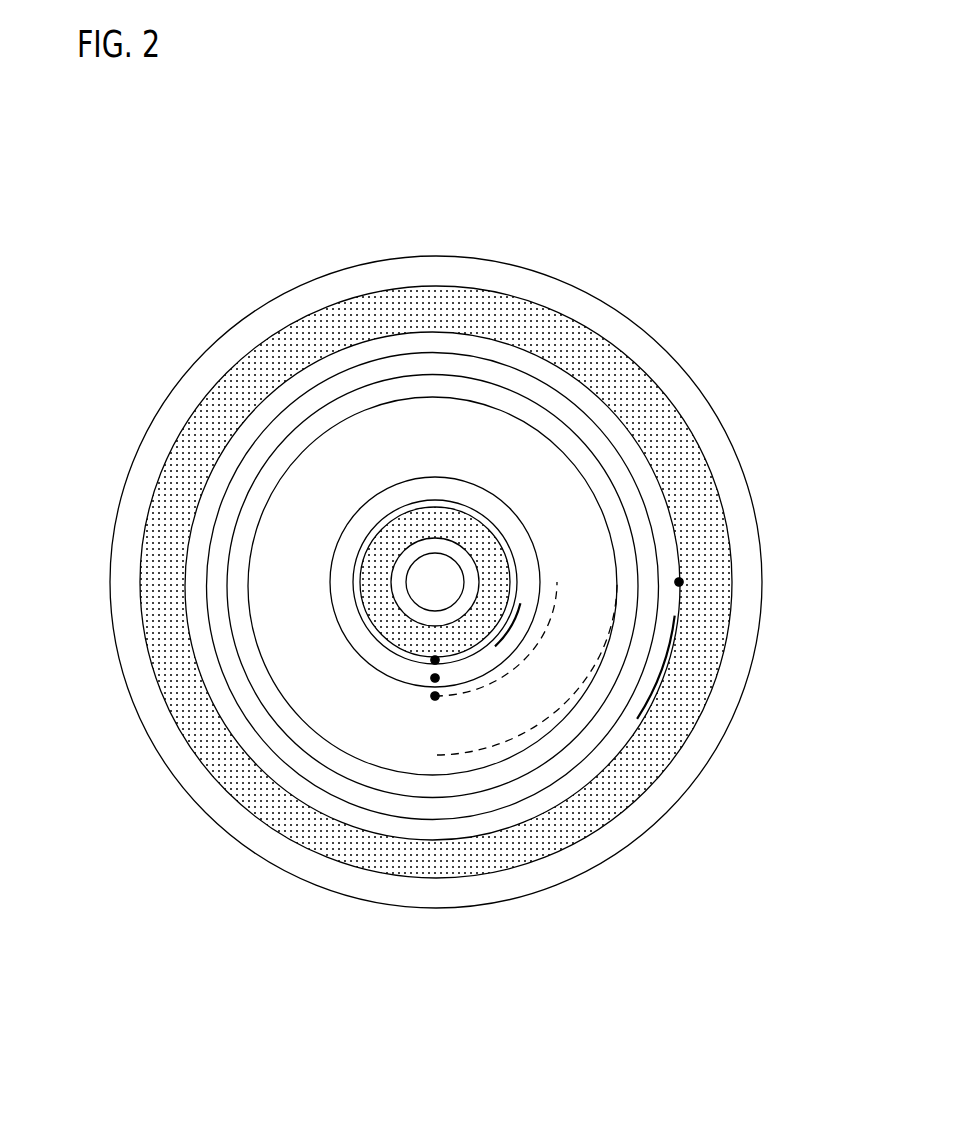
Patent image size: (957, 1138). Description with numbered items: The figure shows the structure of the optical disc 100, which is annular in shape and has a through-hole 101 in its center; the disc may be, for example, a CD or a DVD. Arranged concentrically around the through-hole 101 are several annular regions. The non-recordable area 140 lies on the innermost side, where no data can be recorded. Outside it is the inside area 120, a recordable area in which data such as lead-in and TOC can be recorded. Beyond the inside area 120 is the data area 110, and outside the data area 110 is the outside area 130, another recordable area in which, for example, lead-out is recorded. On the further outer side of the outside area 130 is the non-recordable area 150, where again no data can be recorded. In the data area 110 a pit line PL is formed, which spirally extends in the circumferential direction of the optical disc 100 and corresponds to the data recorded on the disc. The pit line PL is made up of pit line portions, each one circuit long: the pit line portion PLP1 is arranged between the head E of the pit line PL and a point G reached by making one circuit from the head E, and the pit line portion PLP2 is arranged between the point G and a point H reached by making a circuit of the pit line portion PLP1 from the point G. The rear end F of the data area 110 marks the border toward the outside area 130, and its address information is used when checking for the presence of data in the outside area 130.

The optical disc 100 is at (462, 198).
The non-recordable area 150 is at (607, 323).
The outside area 130 is at (535, 328).
The data area 110 is at (660, 548).
The inside area 120 is at (412, 530).
The non-recordable area 140 is at (448, 537).
The through-hole 101 is at (447, 575).
The pit line portion PLP1 is at (358, 537).
The pit line portion PLP2 is at (330, 580).
The pit line PL is at (337, 632).
The head E is at (438, 663).
The rear end F is at (683, 582).
The point G is at (431, 679).
The point H is at (432, 699).